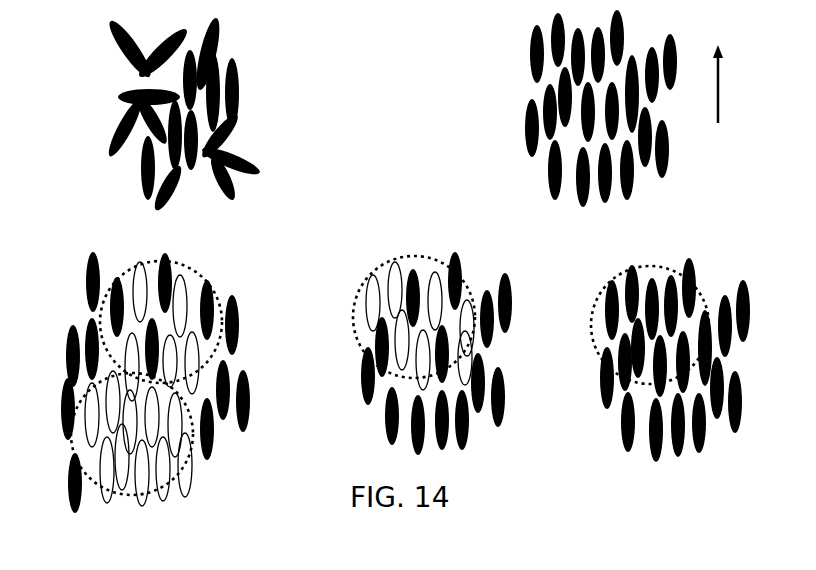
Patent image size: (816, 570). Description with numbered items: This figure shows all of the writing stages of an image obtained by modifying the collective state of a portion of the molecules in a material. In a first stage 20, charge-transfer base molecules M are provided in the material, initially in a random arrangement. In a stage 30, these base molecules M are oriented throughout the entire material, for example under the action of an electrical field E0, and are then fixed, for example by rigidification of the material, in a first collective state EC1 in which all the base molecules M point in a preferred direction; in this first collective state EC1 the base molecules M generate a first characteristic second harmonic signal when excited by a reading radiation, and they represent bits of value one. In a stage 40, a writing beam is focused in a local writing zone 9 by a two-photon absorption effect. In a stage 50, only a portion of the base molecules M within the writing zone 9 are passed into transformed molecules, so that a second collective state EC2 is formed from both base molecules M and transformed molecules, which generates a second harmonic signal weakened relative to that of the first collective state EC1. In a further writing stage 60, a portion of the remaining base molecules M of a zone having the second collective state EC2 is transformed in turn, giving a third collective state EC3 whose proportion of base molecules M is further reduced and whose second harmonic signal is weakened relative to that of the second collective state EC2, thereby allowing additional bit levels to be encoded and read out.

The writing zone 9 is at (382, 270).
The stage of providing base molecules 20 is at (50, 103).
The orientation stage 30 is at (456, 110).
The writing-beam focusing stage 40 is at (562, 213).
The bit inscription stage 50 is at (582, 320).
The new writing stage 60 is at (327, 330).
The base molecules M is at (143, 175).
The electrical field E0 is at (733, 84).
The first collective state EC1 is at (616, 423).
The second collective state EC2 is at (428, 297).
The third collective state EC3 is at (157, 452).